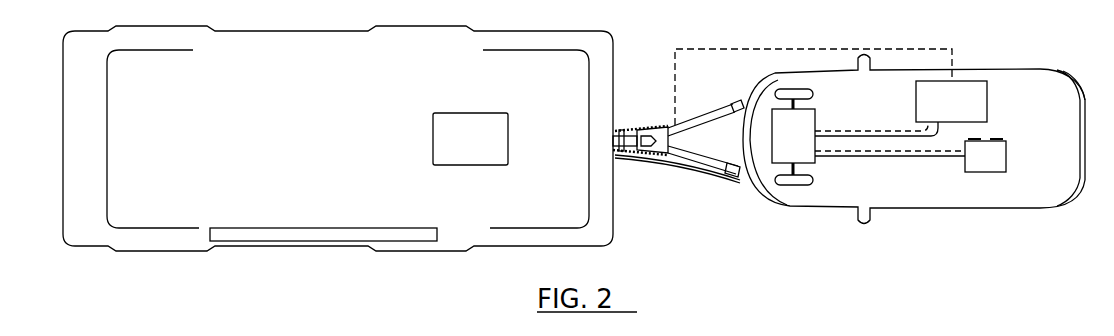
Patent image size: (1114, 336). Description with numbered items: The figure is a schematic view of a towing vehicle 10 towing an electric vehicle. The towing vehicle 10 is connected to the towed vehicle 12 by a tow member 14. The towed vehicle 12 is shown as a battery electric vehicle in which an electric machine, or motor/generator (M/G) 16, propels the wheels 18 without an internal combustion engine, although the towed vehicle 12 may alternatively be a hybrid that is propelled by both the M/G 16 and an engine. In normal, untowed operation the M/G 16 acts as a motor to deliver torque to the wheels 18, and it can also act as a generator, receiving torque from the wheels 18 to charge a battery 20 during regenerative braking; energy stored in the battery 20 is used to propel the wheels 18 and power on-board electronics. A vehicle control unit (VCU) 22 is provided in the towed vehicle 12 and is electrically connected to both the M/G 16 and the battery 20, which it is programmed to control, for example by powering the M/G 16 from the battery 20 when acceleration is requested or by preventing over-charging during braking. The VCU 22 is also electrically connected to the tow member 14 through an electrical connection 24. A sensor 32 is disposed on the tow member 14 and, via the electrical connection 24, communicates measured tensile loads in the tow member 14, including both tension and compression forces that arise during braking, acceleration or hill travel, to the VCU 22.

The towing vehicle 10 is at (310, 246).
The towed vehicle 12 is at (913, 208).
The tow member 14 is at (682, 160).
The motor/generator (M/G) 16 is at (772, 138).
The wheels 18 is at (785, 89).
The battery 20 is at (992, 172).
The vehicle control unit (VCU) 22 is at (967, 81).
The electrical connection 24 is at (872, 48).
The sensor 32 is at (677, 126).